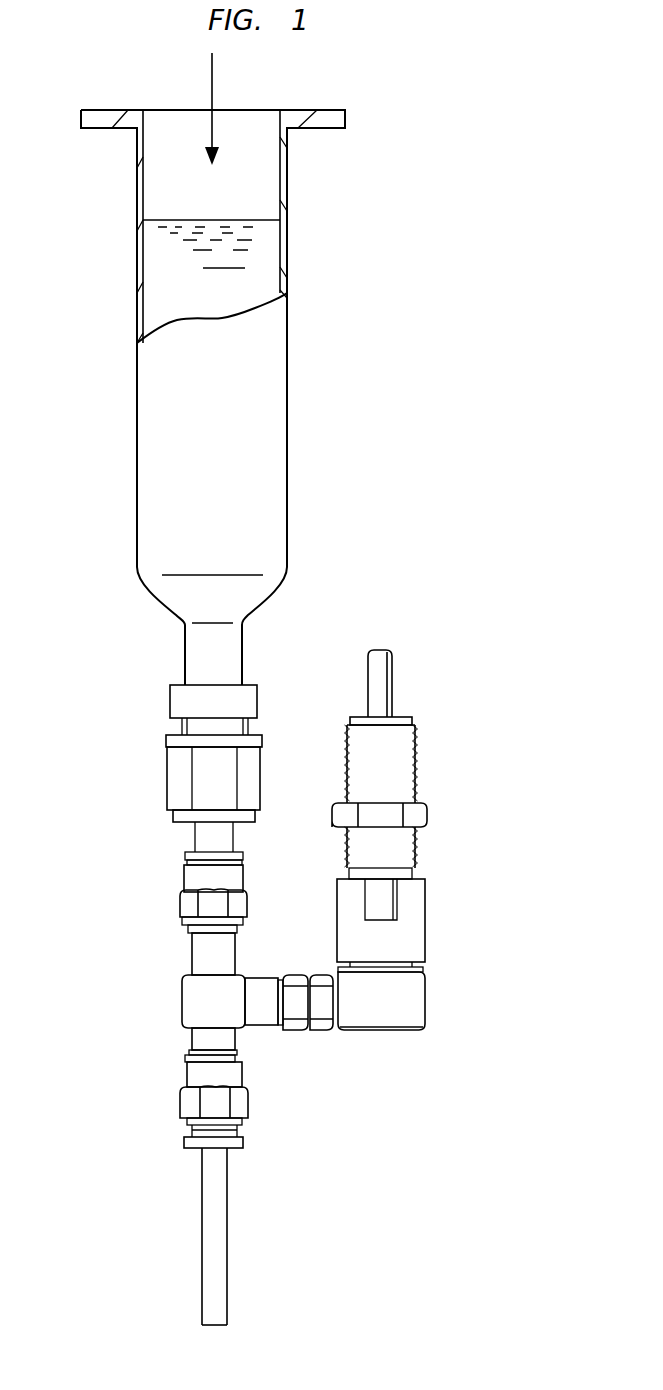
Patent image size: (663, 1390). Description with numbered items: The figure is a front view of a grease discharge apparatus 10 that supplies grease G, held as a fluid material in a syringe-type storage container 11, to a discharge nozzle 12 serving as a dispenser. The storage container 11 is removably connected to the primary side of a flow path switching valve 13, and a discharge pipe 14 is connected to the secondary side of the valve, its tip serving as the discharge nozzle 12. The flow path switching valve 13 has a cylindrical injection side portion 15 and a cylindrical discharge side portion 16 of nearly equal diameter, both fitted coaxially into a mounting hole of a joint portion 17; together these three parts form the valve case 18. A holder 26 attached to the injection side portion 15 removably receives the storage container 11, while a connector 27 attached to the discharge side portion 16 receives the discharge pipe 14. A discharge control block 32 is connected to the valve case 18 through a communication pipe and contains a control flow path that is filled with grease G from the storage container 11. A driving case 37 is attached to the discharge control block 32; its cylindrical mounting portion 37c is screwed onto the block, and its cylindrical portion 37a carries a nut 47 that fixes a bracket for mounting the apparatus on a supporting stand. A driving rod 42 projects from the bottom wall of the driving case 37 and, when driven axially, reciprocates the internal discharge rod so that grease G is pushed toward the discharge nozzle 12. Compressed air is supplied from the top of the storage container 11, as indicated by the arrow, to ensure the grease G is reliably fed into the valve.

The grease discharge apparatus 10 is at (435, 642).
The storage container 11 is at (207, 450).
The discharge nozzle 12 is at (213, 1308).
The flow path switching valve 13 is at (176, 988).
The discharge pipe 14 is at (213, 1187).
The cylindrical injection side portion 15 is at (217, 955).
The cylindrical discharge side portion 16 is at (213, 1042).
The joint portion 17 is at (265, 1005).
The valve case 18 is at (176, 1012).
The holder 26 is at (212, 775).
The connector 27 is at (192, 1102).
The discharge control block 32 is at (388, 997).
The driving case 37 is at (395, 747).
The cylindrical portion 37a is at (382, 780).
The cylindrical mounting portion 37c is at (390, 940).
The driving rod 42 is at (378, 687).
The nut 47 is at (412, 813).
The grease G is at (205, 303).